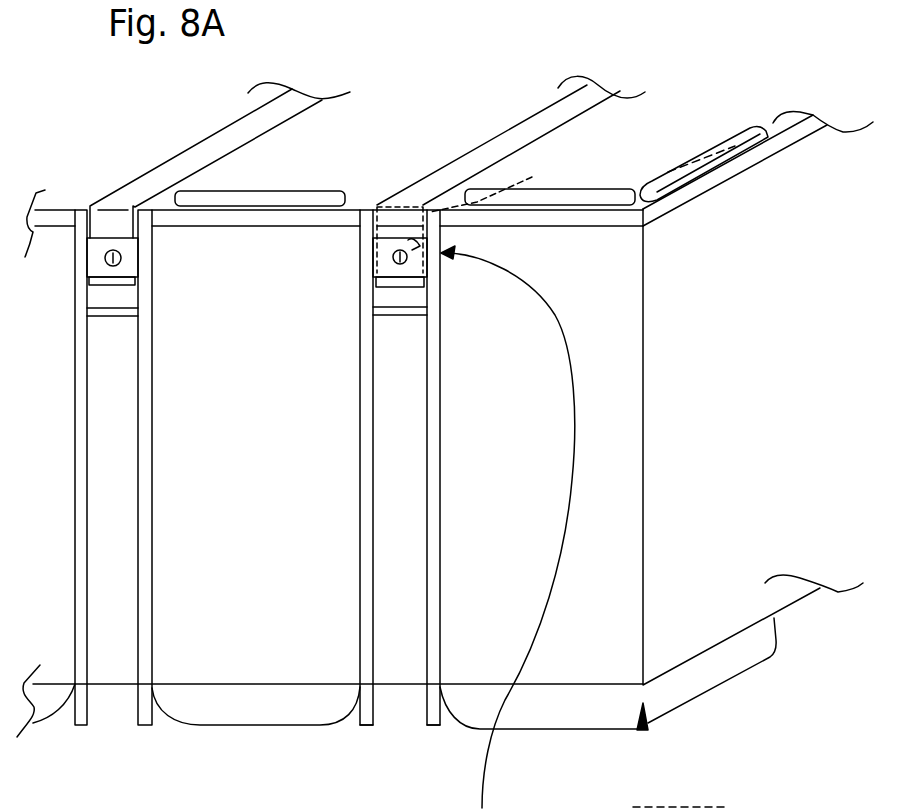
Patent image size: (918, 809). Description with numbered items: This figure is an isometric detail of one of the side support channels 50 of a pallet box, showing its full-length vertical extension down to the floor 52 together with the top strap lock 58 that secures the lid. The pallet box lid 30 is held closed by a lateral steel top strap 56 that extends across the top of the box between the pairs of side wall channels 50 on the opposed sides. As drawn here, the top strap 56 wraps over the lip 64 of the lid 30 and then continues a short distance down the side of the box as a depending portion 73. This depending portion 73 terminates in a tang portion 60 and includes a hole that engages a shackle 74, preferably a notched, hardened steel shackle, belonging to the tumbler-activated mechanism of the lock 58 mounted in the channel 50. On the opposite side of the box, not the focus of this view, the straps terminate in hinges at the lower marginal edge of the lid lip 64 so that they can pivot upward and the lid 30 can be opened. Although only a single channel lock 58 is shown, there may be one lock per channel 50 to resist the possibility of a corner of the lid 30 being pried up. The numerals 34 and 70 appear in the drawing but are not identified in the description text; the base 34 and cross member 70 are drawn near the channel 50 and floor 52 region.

The pallet box lid 30 is at (362, 143).
The base 34 is at (605, 723).
The side wall channel 50 is at (422, 433).
The floor 52 is at (372, 723).
The top strap 56 is at (367, 157).
The lock 58 is at (378, 260).
The tang portion 60 is at (423, 283).
The lid lip 64 is at (565, 215).
The cross member 70 is at (397, 316).
The depending portion 73 is at (398, 228).
The shackle 74 is at (491, 179).